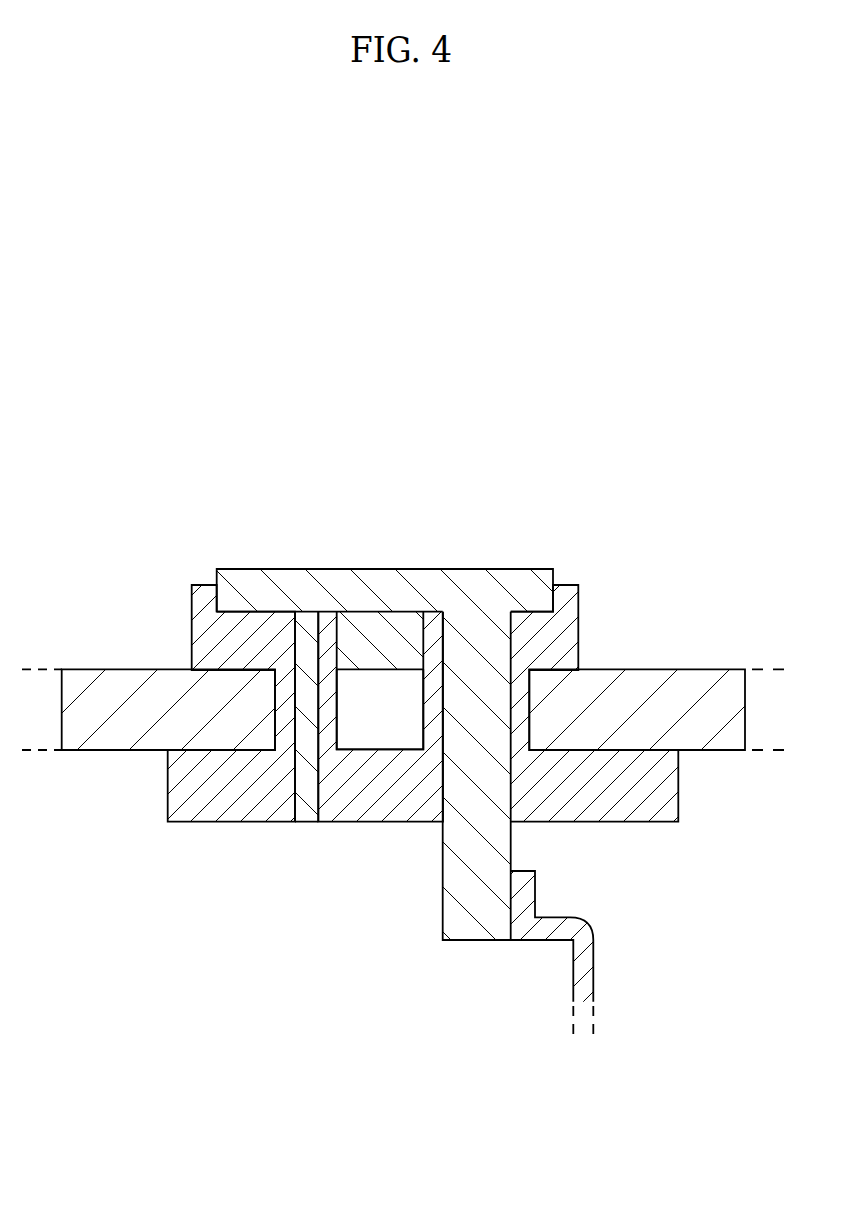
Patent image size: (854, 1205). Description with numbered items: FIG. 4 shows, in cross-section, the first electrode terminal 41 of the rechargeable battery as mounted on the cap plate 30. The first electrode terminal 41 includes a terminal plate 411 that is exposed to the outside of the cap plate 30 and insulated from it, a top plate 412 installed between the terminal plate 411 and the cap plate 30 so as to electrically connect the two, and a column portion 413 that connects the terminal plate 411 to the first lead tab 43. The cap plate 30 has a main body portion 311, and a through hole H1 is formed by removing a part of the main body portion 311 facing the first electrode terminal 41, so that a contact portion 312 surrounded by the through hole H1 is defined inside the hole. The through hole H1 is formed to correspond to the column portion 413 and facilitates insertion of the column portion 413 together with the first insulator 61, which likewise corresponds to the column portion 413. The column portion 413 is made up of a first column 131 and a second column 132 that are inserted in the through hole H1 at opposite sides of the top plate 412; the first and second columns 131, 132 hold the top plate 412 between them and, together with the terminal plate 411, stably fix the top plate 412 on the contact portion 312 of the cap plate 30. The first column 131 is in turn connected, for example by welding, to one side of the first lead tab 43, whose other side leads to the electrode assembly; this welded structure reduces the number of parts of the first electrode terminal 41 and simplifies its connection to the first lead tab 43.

The first electrode terminal 41 is at (362, 735).
The terminal plate 411 is at (328, 577).
The top plate 412 is at (383, 633).
The column portion 413 is at (322, 982).
The first column 131 is at (458, 875).
The second column 132 is at (308, 810).
The first insulator 61 is at (572, 590).
The first lead tab 43 is at (577, 973).
The cap plate 30 is at (404, 845).
The main body portion 311 is at (630, 740).
The contact portion 312 is at (398, 723).
The through hole H1 is at (530, 710).